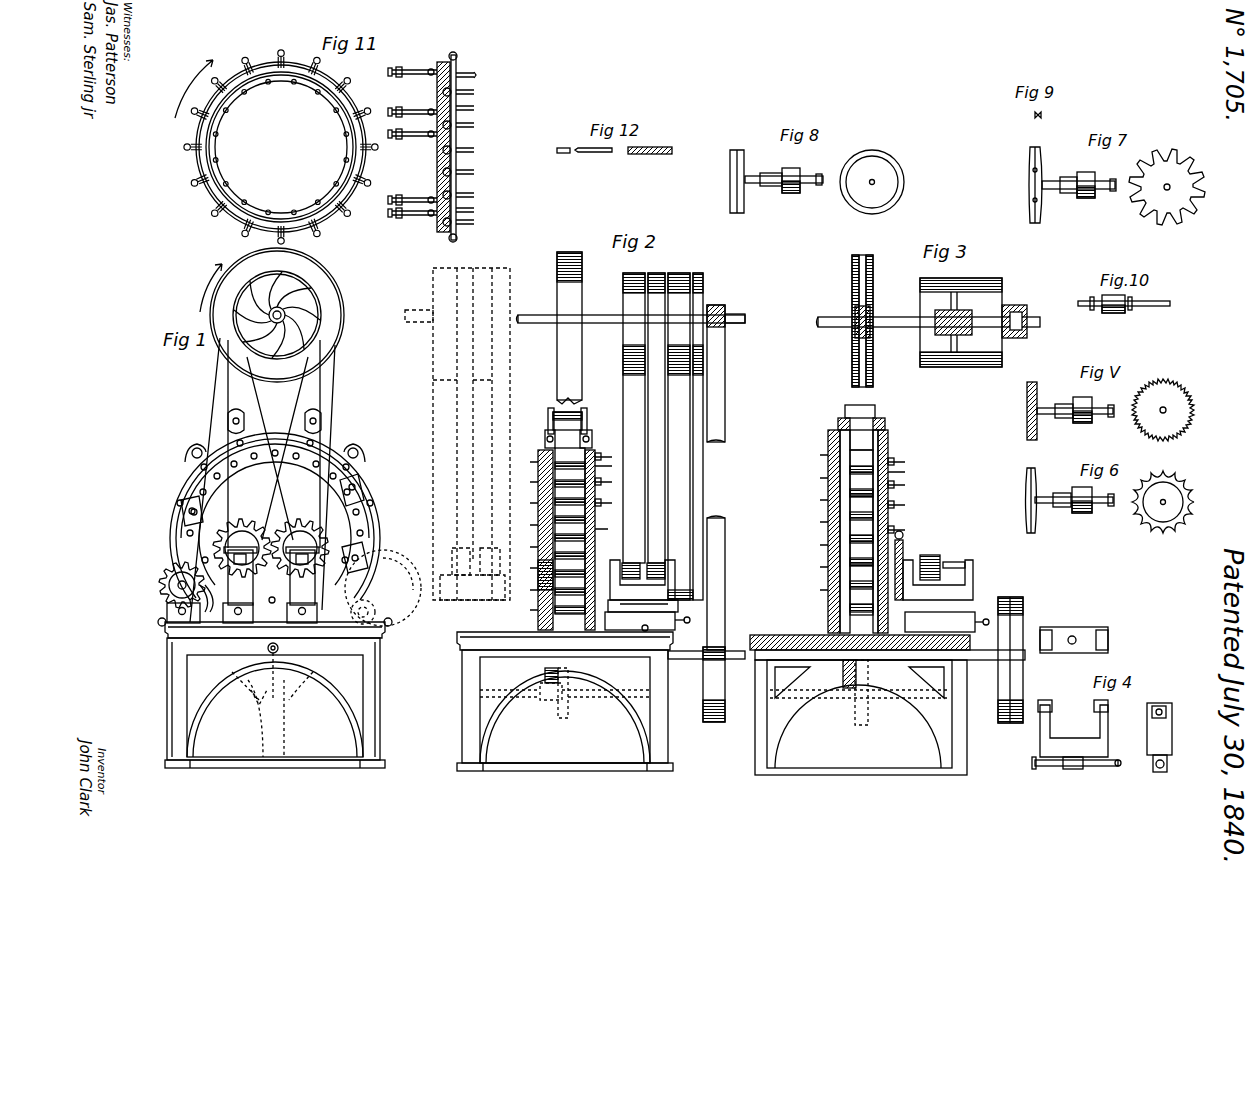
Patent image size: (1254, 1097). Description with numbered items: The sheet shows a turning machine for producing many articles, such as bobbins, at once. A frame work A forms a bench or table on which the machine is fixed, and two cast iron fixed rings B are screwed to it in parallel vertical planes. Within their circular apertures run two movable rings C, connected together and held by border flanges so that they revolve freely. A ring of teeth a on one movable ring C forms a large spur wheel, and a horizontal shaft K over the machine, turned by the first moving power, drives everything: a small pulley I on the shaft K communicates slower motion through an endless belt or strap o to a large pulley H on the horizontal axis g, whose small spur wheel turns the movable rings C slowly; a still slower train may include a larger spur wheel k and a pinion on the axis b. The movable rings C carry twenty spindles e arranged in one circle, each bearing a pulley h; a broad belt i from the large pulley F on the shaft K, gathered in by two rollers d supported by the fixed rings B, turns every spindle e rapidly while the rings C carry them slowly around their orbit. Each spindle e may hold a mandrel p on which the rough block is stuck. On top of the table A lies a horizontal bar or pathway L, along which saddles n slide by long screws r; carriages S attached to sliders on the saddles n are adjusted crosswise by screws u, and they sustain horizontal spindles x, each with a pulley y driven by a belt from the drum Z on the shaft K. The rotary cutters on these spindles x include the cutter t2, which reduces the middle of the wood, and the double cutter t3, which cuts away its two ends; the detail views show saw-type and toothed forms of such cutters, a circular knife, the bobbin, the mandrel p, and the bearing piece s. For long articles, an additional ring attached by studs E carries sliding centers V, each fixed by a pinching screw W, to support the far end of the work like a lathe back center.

In FIG. 1, the frame work A is at (270, 711).
In FIG. 2, the frame work A is at (564, 710).
In FIG. 3, the frame work A is at (857, 716).
In FIG. 1, the fixed circular plates or rings B is at (276, 516).
In FIG. 2, the fixed circular plates or rings B is at (562, 540).
In FIG. 3, the fixed circular plates or rings B is at (857, 531).
In FIG. 1, the movable rings C is at (275, 523).
In FIG. 11, the studs E is at (412, 137).
In FIG. 1, the large pulley F is at (326, 280).
In FIG. 2, the large pulley F is at (574, 328).
In FIG. 3, the large pulley F is at (868, 321).
In FIG. 2, the large pulley H is at (714, 684).
In FIG. 3, the large pulley H is at (1010, 660).
In FIG. 2, the small pulley I is at (726, 314).
In FIG. 3, the small pulley I is at (1014, 315).
In FIG. 2, the horizontal shaft K is at (631, 312).
In FIG. 3, the horizontal shaft K is at (929, 315).
In FIG. 1, the horizontal bar or pathway L is at (275, 630).
In FIG. 2, the horizontal bar or pathway L is at (565, 635).
In FIG. 1, the carriages S is at (271, 576).
In FIG. 2, the carriages S is at (643, 586).
In FIG. 3, the carriages S is at (938, 581).
In FIG. 11, the sliding center V is at (461, 144).
In FIG. 12, the sliding center V is at (617, 157).
In FIG. 11, the pinching screw W is at (281, 142).
In FIG. 1, the large pulley or drum Z is at (277, 297).
In FIG. 2, the large pulley or drum Z is at (663, 436).
In FIG. 3, the large pulley or drum Z is at (961, 322).
In FIG. 3, the ring of teeth a is at (861, 440).
In FIG. 1, the axis b is at (274, 523).
In FIG. 2, the rollers d is at (568, 423).
In FIG. 3, the rollers d is at (861, 411).
In FIG. 1, the spindles e is at (275, 526).
In FIG. 2, the horizontal axis g is at (706, 649).
In FIG. 3, the horizontal axis g is at (887, 647).
In FIG. 2, the pulleys h is at (570, 531).
In FIG. 3, the pulleys h is at (861, 532).
In FIG. 10, the pulleys h is at (1124, 300).
In FIG. 1, the broad belt i is at (262, 480).
In FIG. 2, the larger spur wheel k is at (565, 693).
In FIG. 3, the larger spur wheel k is at (860, 692).
In FIG. 2, the saddles n is at (650, 621).
In FIG. 3, the saddles n is at (951, 622).
In FIG. 2, the endless belt or strap o is at (712, 477).
In FIG. 2, the mandrel p is at (607, 488).
In FIG. 3, the mandrel p is at (898, 523).
In FIG. 1, the long screws r is at (273, 622).
In FIG. 4, the bearing piece s is at (1105, 699).
In FIG. 1, the screws u is at (242, 604).
In FIG. 4, the screws u is at (1081, 763).
In FIG. 1, the horizontal spindles x is at (290, 572).
In FIG. 8, the horizontal spindles x is at (776, 181).
In FIG. 7, the horizontal spindles x is at (1079, 181).
In FIG. 5, the horizontal spindles x is at (1075, 405).
In FIG. 6, the horizontal spindles x is at (1074, 494).
In FIG. 8, the pulley y is at (843, 182).
In FIG. 7, the pulley y is at (1086, 178).
In FIG. 5, the pulley y is at (1082, 403).
In FIG. 6, the pulley y is at (1082, 493).
In FIG. 7, the rotary cutter t2 is at (1167, 187).
In FIG. 5, the rotary cutter t2 is at (1110, 410).
In FIG. 6, the rotary cutter t2 is at (1110, 500).
In FIG. 7, the double rotary cutter t3 is at (1041, 185).